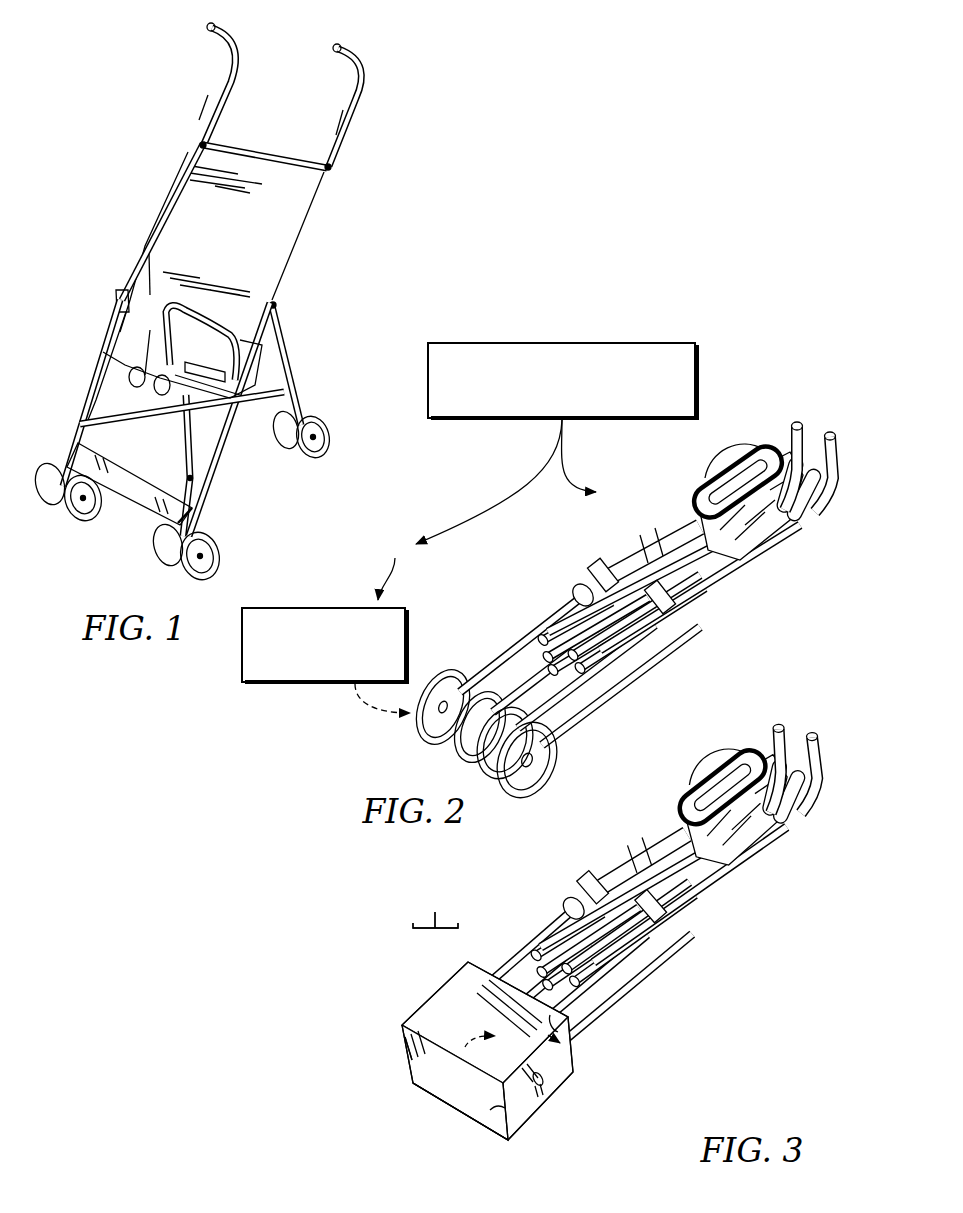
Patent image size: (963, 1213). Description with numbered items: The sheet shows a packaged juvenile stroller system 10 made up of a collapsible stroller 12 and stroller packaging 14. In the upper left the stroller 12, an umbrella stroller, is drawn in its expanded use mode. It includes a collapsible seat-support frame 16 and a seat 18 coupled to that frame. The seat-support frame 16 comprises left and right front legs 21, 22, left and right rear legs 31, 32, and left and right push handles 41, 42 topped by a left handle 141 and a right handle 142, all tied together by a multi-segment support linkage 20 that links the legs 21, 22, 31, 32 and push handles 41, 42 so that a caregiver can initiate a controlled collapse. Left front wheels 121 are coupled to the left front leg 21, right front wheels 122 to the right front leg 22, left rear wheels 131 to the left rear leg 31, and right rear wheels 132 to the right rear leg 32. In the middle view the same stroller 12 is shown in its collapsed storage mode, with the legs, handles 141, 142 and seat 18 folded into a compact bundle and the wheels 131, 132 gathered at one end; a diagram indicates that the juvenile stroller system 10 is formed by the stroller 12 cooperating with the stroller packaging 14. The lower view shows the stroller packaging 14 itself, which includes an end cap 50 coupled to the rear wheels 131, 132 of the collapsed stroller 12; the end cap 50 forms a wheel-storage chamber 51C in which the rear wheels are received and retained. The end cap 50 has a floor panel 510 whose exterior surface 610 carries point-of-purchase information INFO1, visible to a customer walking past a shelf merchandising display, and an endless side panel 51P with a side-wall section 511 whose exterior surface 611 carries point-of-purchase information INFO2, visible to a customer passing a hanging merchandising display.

In FIG. 2, the packaged juvenile stroller system 10 is at (645, 343).
In FIG. 3, the packaged juvenile stroller system 10 is at (435, 907).
In FIG. 1, the collapsible stroller 12 is at (104, 302).
In FIG. 2, the collapsible stroller 12 is at (662, 516).
In FIG. 3, the collapsible stroller 12 is at (532, 927).
In FIG. 2, the stroller packaging 14 is at (402, 566).
In FIG. 3, the stroller packaging 14 is at (421, 977).
In FIG. 1, the seat-support frame 16 is at (238, 445).
In FIG. 1, the seat 18 is at (182, 215).
In FIG. 2, the seat 18 is at (737, 565).
In FIG. 3, the seat 18 is at (712, 882).
In FIG. 1, the multi-segment support linkage 20 is at (171, 435).
In FIG. 2, the multi-segment support linkage 20 is at (548, 617).
In FIG. 1, the left front leg 21 is at (84, 398).
In FIG. 1, the right front leg 22 is at (223, 455).
In FIG. 2, the left rear leg 31 is at (493, 671).
In FIG. 1, the right rear leg 32 is at (285, 362).
In FIG. 2, the right rear leg 32 is at (588, 684).
In FIG. 1, the left push handle 41 is at (196, 123).
In FIG. 1, the right push handle 42 is at (333, 150).
In FIG. 3, the end cap 50 is at (405, 995).
In FIG. 1, the left front wheels 121 is at (33, 492).
In FIG. 2, the left front wheels 121 is at (718, 466).
In FIG. 3, the left front wheels 121 is at (712, 756).
In FIG. 1, the right front wheels 122 is at (155, 555).
In FIG. 2, the right front wheels 122 is at (810, 525).
In FIG. 3, the right front wheels 122 is at (778, 824).
In FIG. 1, the left rear wheels 131 is at (100, 364).
In FIG. 2, the left rear wheels 131 is at (443, 671).
In FIG. 3, the left rear wheels 131 is at (465, 1047).
In FIG. 1, the right rear wheels 132 is at (333, 424).
In FIG. 2, the right rear wheels 132 is at (561, 731).
In FIG. 3, the right rear wheels 132 is at (575, 1055).
In FIG. 1, the left handle 141 is at (218, 27).
In FIG. 2, the left handle 141 is at (806, 426).
In FIG. 3, the left handle 141 is at (782, 729).
In FIG. 1, the right handle 142 is at (345, 50).
In FIG. 2, the right handle 142 is at (840, 442).
In FIG. 3, the right handle 142 is at (822, 748).
In FIG. 3, the floor panel 510 is at (488, 1113).
In FIG. 3, the side-wall section 511 is at (570, 1013).
In FIG. 3, the wheel-storage chamber 51C is at (470, 1092).
In FIG. 3, the endless side panel 51P is at (558, 1105).
In FIG. 3, the exterior surface of floor panel 610 is at (483, 1090).
In FIG. 3, the exterior surface of side-wall section 611 is at (438, 1035).
In FIG. 3, the point-of-purchase information INFO1 is at (410, 1057).
In FIG. 3, the point-of-purchase information INFO2 is at (435, 1005).